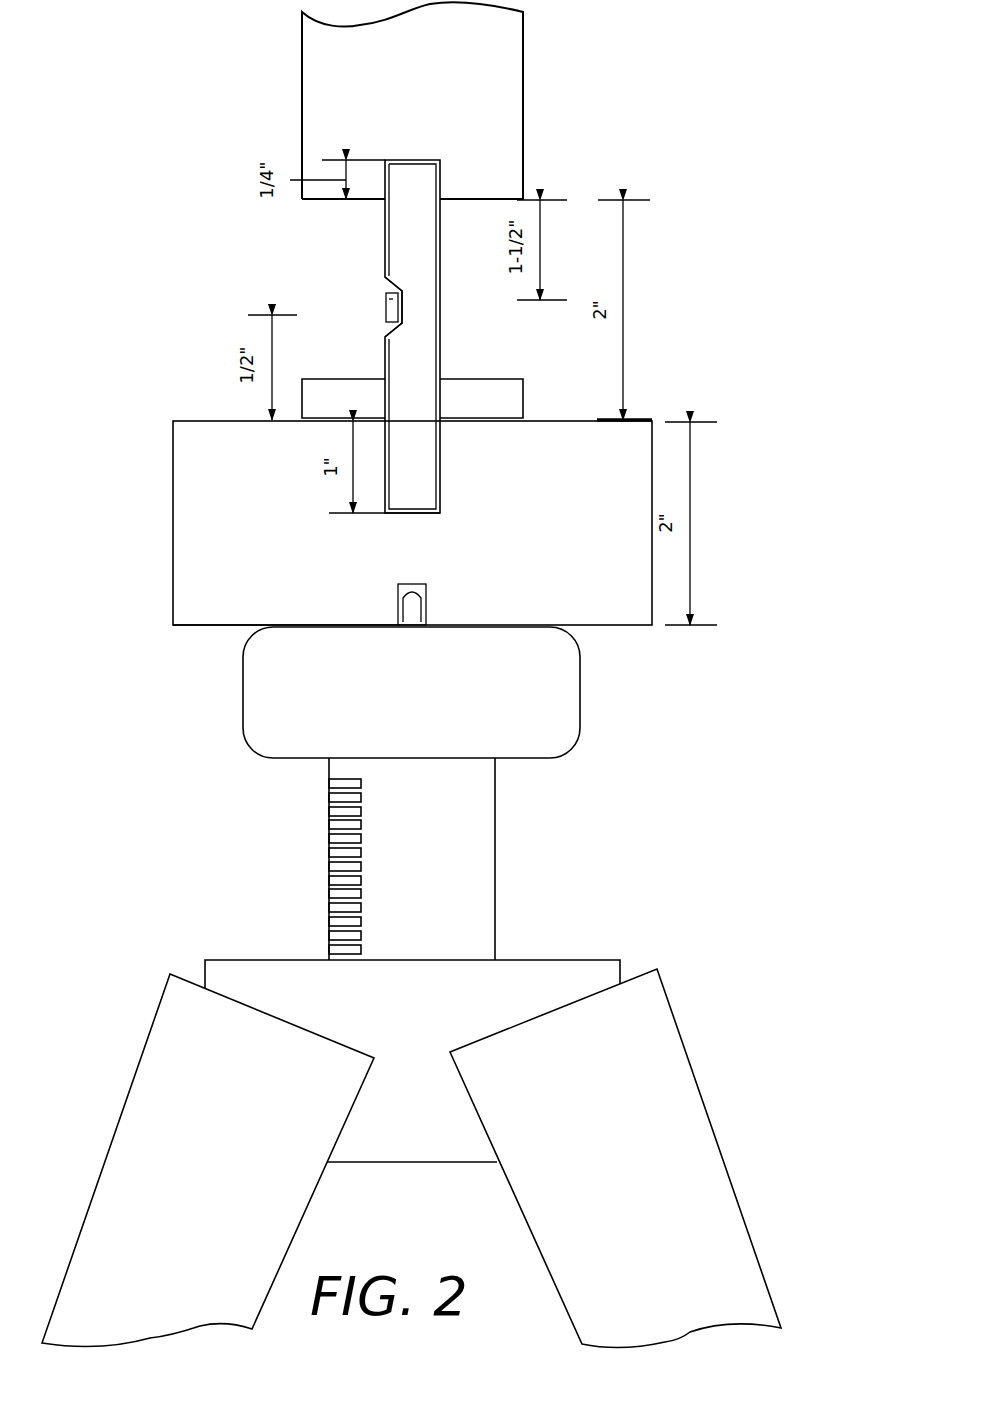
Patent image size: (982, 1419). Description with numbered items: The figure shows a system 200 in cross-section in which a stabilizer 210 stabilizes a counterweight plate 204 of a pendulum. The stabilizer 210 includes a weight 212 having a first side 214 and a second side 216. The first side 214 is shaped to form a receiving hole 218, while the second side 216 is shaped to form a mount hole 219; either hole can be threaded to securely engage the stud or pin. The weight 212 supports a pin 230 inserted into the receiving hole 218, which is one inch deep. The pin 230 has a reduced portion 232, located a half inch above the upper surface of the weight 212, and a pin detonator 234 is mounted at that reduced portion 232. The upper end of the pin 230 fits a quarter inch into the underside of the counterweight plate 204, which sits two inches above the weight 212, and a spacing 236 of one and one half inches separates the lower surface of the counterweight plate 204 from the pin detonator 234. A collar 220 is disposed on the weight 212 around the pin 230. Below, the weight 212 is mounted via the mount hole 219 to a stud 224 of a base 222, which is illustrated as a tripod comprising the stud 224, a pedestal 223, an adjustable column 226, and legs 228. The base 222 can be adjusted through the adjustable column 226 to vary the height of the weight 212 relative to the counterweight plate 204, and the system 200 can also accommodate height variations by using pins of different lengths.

The system 200 is at (815, 52).
The counterweight plate 204 is at (519, 100).
The stabilizer 210 is at (770, 640).
The weight 212 is at (648, 420).
The first side 214 is at (195, 421).
The second side 216 is at (195, 625).
The receiving hole 218 is at (438, 487).
The mount hole 219 is at (417, 584).
The collar 220 is at (450, 379).
The base 222 is at (715, 782).
The pedestal 223 is at (572, 715).
The stud 224 is at (404, 618).
The adjustable column 226 is at (329, 848).
The legs 228 is at (752, 1275).
The pin 230 is at (425, 250).
The reduced portion 232 is at (408, 285).
The pin detonator 234 is at (392, 297).
The spacing 236 is at (553, 200).